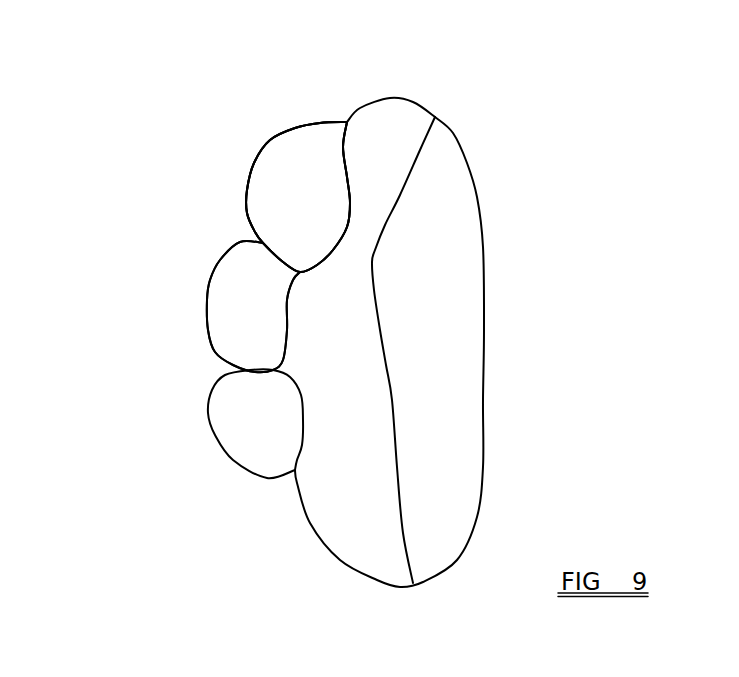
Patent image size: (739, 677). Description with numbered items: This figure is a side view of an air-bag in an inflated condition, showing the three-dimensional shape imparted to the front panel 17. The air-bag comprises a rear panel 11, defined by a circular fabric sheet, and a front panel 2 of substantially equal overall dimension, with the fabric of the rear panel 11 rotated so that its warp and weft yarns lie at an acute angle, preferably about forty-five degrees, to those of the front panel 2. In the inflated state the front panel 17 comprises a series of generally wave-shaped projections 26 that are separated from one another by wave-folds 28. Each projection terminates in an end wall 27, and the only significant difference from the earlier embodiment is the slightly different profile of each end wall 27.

The front panel 2 is at (392, 167).
The rear panel 11 is at (425, 200).
The front panel 17 is at (287, 150).
The wave-shaped projections 26 is at (267, 197).
The end wall 27 is at (310, 177).
The wave-folds 28 is at (263, 243).